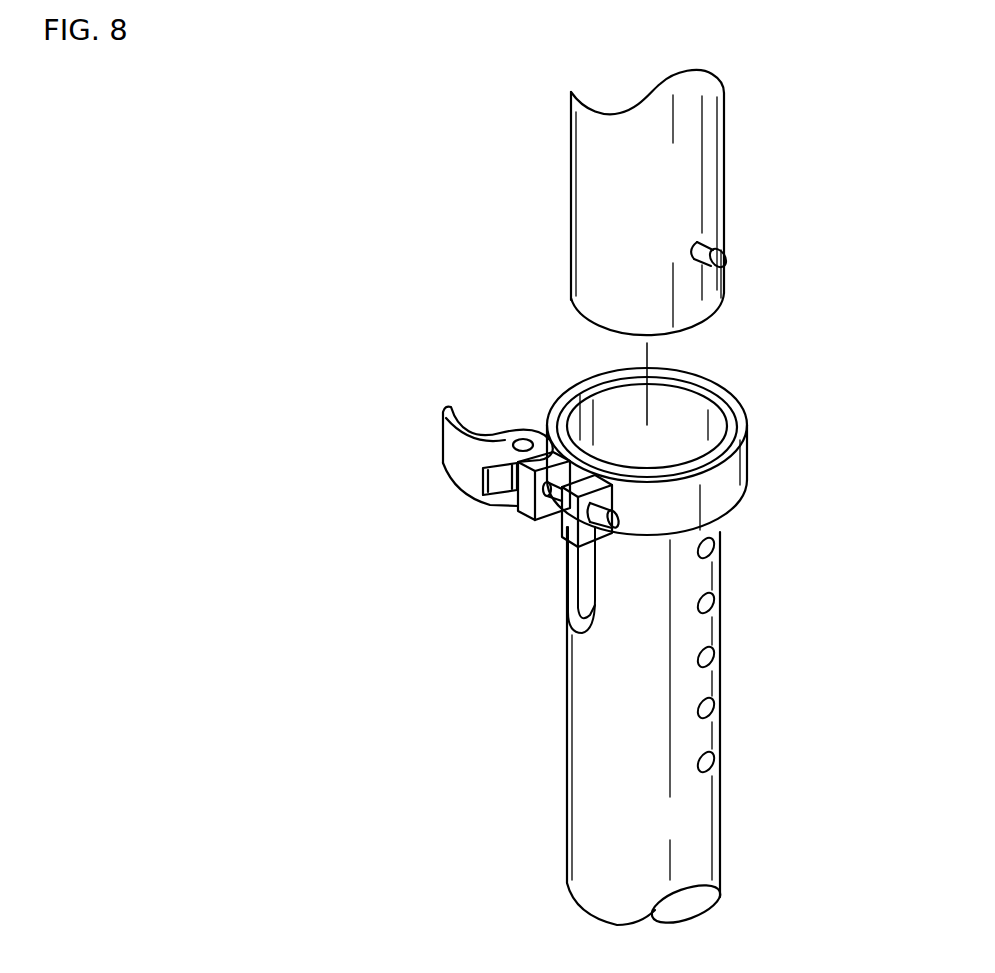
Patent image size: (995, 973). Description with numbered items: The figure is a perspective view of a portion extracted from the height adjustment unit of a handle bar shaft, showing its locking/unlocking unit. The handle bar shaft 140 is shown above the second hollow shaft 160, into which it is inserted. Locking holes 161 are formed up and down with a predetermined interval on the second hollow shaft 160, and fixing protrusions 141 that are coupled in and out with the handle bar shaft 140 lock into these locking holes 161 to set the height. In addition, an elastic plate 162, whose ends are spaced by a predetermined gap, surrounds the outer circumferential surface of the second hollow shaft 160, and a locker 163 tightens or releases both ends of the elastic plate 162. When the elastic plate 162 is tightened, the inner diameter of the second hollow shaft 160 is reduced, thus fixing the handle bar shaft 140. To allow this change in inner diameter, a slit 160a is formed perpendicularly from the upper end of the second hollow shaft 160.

The handle bar shaft 140 is at (585, 219).
The fixing protrusions 141 is at (725, 255).
The second hollow shaft 160 is at (590, 760).
The slit 160a is at (575, 590).
The locking holes 161 is at (715, 657).
The elastic plate 162 is at (745, 455).
The locker 163 is at (455, 450).